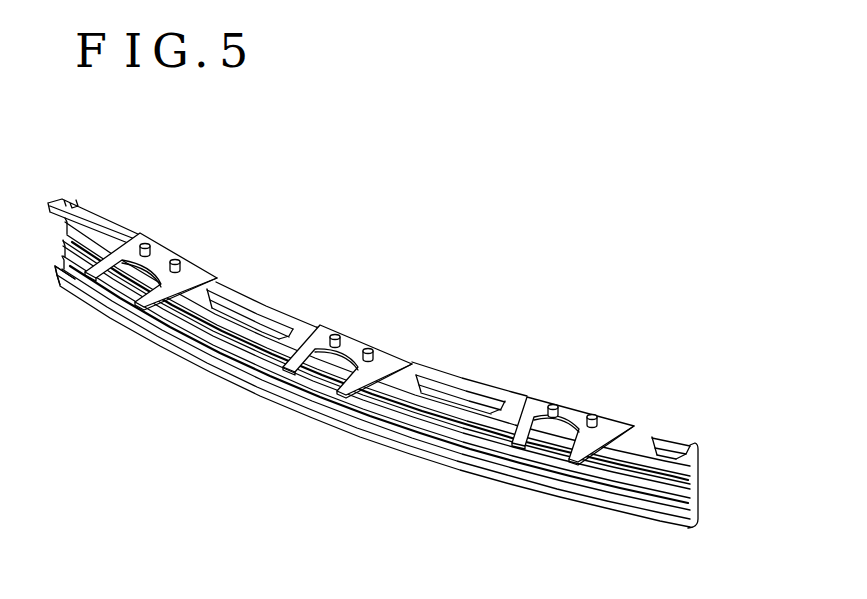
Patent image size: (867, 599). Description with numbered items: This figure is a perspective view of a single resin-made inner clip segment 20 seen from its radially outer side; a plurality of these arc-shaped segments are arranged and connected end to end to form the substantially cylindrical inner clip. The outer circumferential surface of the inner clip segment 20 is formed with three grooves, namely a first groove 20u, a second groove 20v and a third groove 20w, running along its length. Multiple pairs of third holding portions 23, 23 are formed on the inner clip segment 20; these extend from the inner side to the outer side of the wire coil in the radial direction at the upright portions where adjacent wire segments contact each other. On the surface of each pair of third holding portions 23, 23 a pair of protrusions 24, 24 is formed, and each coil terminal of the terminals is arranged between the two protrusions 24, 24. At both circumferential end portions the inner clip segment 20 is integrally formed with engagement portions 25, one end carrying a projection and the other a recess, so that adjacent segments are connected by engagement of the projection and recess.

The inner clip segment 20 is at (356, 294).
The first groove 20u is at (692, 465).
The second groove 20v is at (690, 486).
The third groove 20w is at (688, 511).
The third holding portion 23 is at (512, 447).
The protrusion 24 is at (553, 404).
The engagement portion 25 is at (82, 207).